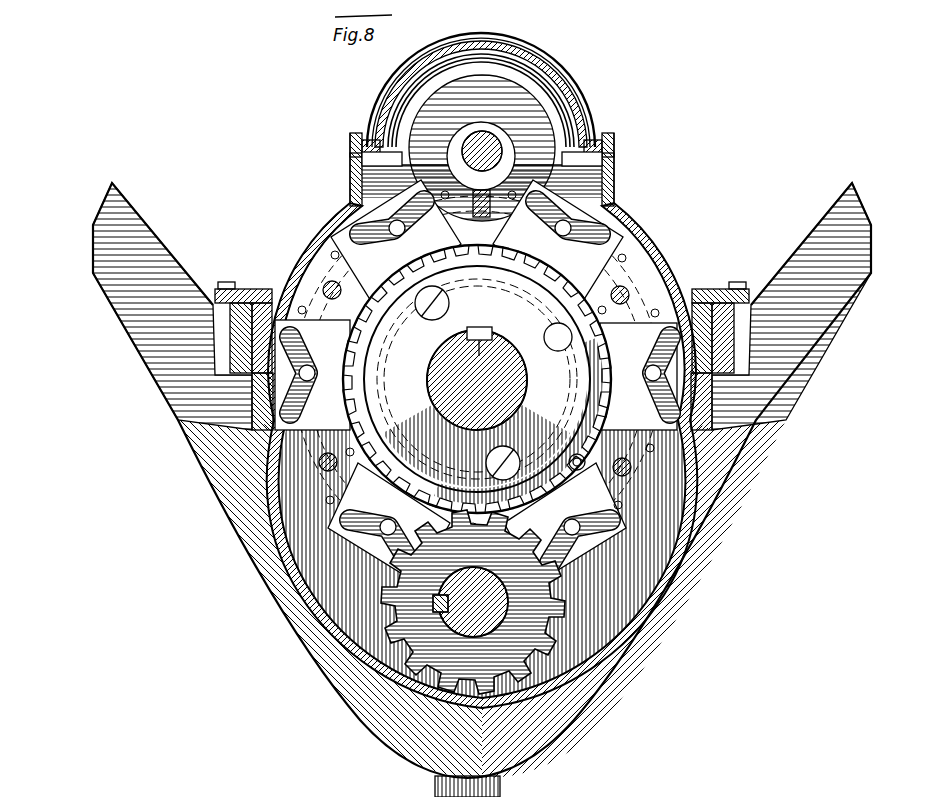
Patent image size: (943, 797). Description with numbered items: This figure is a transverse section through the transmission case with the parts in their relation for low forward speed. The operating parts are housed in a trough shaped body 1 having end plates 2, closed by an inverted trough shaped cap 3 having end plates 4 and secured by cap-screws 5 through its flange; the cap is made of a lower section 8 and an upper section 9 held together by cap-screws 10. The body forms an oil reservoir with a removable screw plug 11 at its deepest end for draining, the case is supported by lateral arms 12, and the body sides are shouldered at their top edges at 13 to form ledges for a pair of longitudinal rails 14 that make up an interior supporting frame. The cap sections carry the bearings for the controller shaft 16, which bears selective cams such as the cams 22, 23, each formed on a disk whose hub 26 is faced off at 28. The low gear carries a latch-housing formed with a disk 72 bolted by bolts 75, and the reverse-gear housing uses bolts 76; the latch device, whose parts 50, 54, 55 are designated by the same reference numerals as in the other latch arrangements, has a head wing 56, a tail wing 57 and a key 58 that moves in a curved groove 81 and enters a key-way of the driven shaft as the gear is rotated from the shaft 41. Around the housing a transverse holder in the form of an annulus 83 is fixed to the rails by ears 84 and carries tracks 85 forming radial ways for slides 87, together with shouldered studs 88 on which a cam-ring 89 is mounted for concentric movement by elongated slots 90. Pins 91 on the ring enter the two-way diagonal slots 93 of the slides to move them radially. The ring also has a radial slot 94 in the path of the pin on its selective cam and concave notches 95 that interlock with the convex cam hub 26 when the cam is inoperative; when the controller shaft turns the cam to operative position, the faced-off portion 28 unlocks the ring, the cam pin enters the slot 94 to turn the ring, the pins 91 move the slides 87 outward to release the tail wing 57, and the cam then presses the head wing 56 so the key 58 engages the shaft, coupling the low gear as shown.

The trough shaped body 1 is at (626, 681).
The end plates 2 is at (662, 556).
The cover or cap 3 is at (630, 268).
The end plates 4 is at (626, 242).
The cap-screws 5 is at (228, 282).
The lower section 8 is at (351, 187).
The upper section 9 is at (393, 123).
The cap-screws 10 is at (352, 135).
The screw plug 11 is at (501, 788).
The lateral arms 12 is at (482, 306).
The offset or shoulder 13 is at (232, 365).
The longitudinal rails 14 is at (232, 338).
The controller shaft 16 is at (485, 136).
The peripheral cam 22 is at (468, 141).
The peripheral cam 23 is at (585, 181).
The hub 26 is at (476, 138).
The faced-off portion 28 is at (516, 160).
The shaft 41 is at (473, 602).
The pawl 50 is at (571, 257).
The pawl pin 54 is at (583, 271).
The pin 55 is at (475, 375).
The head wing 56 is at (590, 379).
The tail wing 57 is at (604, 382).
The key 58 is at (493, 291).
The disk 72 is at (477, 379).
The bolts 75 is at (453, 383).
The bolts 76 is at (477, 378).
The curved groove 81 is at (542, 319).
The annulus 83 is at (664, 264).
The ears 84 is at (262, 296).
The tracks 85 is at (662, 250).
The slides 87 is at (350, 224).
The shouldered studs 88 is at (342, 270).
The cam-ring 89 is at (322, 456).
The elongated slots 90 is at (264, 458).
The pins 91 is at (300, 662).
The slots 93 is at (720, 406).
The radial slot 94 is at (482, 218).
The concave notches 95 is at (479, 150).